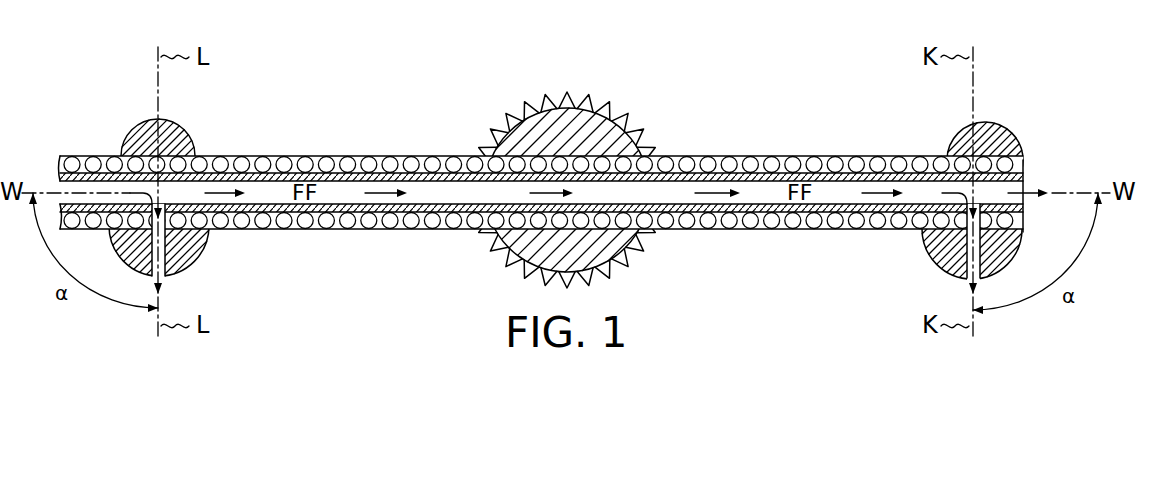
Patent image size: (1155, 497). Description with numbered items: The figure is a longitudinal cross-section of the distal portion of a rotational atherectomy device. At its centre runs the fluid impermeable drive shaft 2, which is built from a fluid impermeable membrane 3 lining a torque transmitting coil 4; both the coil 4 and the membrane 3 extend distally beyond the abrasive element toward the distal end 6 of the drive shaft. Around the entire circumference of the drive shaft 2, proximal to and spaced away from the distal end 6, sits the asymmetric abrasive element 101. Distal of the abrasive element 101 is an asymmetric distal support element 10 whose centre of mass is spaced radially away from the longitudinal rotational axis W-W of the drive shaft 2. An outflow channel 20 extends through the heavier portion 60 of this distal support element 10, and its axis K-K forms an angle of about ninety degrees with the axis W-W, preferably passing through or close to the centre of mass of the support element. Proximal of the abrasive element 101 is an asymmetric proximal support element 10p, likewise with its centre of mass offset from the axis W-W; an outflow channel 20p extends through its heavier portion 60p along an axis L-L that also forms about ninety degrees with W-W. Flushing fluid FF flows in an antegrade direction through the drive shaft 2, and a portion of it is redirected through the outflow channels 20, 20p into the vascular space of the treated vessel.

The drive shaft 2 is at (396, 150).
The fluid impermeable membrane 3 is at (425, 208).
The torque transmitting coil 4 is at (330, 229).
The distal end of the drive shaft 6 is at (1032, 168).
The asymmetric distal support element 10 is at (930, 276).
The asymmetric proximal support element 10p is at (200, 280).
The outflow channel 20 is at (988, 247).
The outflow channel 20p is at (140, 250).
The heavier portion of the asymmetric distal support element 60 is at (940, 245).
The heavier portion of the asymmetric proximal support element 60p is at (191, 248).
The asymmetric abrasive element 101 is at (622, 99).